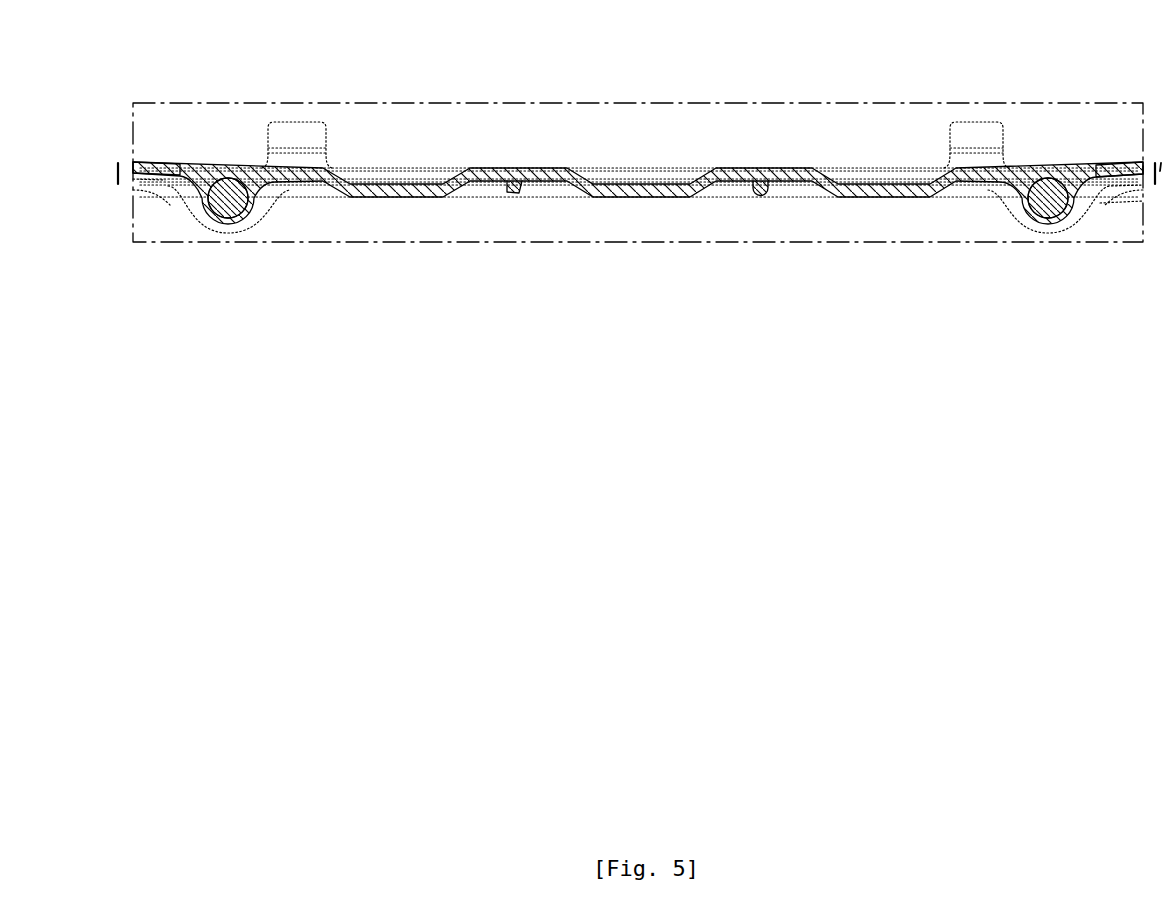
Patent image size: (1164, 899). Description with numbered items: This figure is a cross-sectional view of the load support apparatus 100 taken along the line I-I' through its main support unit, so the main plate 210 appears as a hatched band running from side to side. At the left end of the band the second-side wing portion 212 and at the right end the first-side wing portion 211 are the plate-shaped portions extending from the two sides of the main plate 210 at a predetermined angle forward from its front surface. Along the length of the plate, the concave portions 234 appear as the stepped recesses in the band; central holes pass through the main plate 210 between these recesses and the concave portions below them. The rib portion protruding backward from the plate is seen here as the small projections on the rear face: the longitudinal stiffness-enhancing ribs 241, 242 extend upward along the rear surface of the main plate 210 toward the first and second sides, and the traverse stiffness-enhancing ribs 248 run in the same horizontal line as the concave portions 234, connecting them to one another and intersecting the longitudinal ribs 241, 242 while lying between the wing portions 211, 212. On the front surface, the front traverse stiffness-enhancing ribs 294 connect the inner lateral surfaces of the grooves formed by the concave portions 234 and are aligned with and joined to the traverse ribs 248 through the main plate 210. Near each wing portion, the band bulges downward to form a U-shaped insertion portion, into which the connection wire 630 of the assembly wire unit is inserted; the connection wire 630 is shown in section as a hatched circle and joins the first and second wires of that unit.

The load support apparatus 100 is at (128, 32).
The main plate 210 is at (762, 170).
The first-side wing portion 211 is at (1130, 165).
The second-side wing portion 212 is at (160, 170).
The concave portions 234 is at (640, 199).
The longitudinal stiffness-enhancing rib 241 is at (760, 198).
The longitudinal stiffness-enhancing rib 242 is at (514, 196).
The traverse stiffness-enhancing ribs 248 is at (303, 199).
The front traverse stiffness-enhancing ribs 294 is at (397, 165).
The connection wire 630 is at (1048, 202).